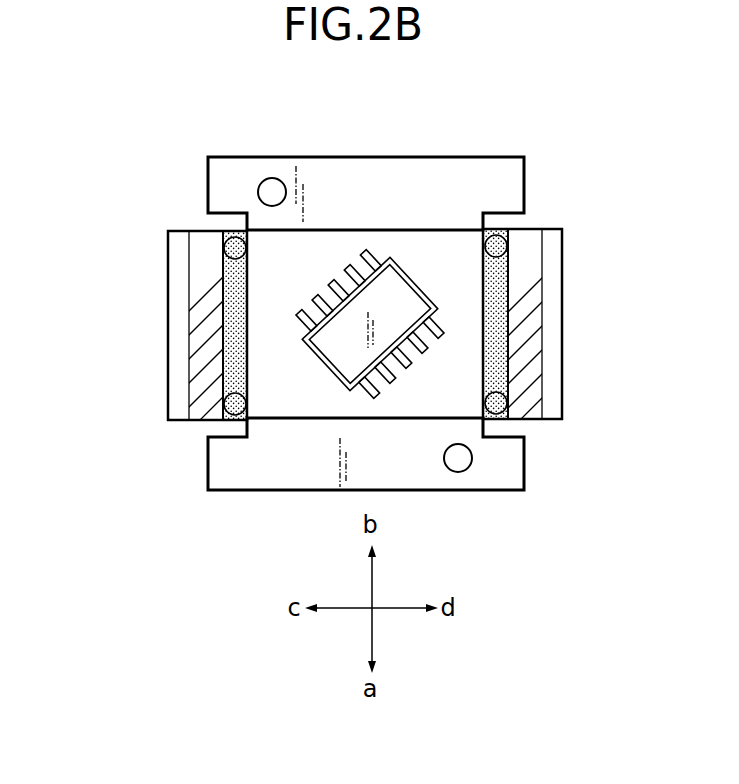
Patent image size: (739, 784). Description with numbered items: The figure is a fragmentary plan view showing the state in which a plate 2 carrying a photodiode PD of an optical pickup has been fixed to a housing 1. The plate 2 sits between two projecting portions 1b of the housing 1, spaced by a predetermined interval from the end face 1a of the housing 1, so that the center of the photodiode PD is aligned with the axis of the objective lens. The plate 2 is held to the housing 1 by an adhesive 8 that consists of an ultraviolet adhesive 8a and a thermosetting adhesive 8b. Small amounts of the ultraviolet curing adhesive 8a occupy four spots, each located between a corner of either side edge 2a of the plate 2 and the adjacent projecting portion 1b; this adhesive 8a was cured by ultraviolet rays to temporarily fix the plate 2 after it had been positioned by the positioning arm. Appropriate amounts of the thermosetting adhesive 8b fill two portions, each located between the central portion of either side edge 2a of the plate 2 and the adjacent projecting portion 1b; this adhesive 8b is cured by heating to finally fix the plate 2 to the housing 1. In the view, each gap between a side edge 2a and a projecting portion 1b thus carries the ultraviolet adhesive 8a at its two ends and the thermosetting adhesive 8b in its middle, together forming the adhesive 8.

The housing 1 is at (175, 231).
The end face 1a is at (324, 243).
The projecting portion 1b is at (201, 231).
The plate 2 is at (343, 157).
The side edge 2a is at (273, 355).
The adhesive 8 is at (360, 324).
The ultraviolet adhesive 8a is at (228, 249).
The thermosetting adhesive 8b is at (226, 314).
The photodiode PD is at (398, 296).